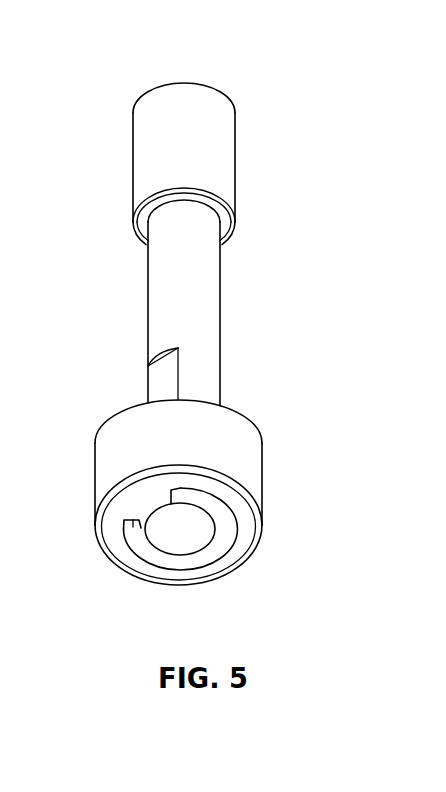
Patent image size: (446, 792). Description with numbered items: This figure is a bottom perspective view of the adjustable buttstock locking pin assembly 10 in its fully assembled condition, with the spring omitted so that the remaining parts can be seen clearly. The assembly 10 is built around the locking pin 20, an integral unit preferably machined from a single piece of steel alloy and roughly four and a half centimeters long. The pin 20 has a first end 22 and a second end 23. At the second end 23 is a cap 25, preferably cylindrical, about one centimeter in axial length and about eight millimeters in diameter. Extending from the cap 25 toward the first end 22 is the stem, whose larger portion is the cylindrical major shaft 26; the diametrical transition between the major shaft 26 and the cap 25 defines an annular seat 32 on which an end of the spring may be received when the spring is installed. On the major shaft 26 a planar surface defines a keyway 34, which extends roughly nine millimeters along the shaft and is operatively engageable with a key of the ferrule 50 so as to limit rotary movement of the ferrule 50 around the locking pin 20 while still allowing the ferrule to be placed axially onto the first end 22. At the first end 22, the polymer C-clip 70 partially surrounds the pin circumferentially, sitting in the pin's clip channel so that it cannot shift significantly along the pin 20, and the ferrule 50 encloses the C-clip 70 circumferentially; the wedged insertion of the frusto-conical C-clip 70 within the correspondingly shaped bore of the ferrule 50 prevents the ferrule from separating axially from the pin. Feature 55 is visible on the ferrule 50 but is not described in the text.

The locking pin assembly 10 is at (247, 93).
The locking pin 20 is at (157, 265).
The first end 22 is at (182, 532).
The second end 23 is at (180, 83).
The cap 25 is at (152, 145).
The major shaft 26 is at (222, 295).
The annular seat 32 is at (157, 207).
The keyway 34 is at (160, 382).
The ferrule 50 is at (124, 441).
The knob bottom face 55 is at (128, 508).
The C-clip 70 is at (224, 530).